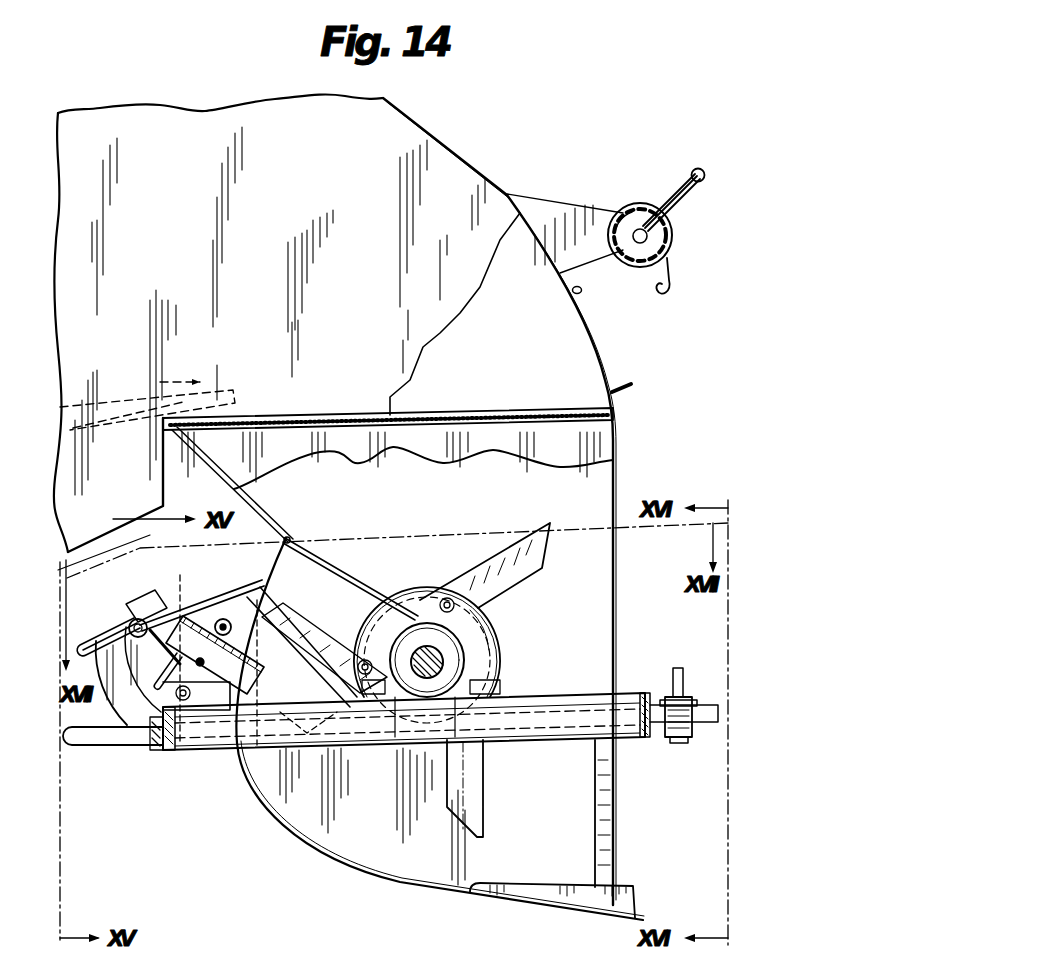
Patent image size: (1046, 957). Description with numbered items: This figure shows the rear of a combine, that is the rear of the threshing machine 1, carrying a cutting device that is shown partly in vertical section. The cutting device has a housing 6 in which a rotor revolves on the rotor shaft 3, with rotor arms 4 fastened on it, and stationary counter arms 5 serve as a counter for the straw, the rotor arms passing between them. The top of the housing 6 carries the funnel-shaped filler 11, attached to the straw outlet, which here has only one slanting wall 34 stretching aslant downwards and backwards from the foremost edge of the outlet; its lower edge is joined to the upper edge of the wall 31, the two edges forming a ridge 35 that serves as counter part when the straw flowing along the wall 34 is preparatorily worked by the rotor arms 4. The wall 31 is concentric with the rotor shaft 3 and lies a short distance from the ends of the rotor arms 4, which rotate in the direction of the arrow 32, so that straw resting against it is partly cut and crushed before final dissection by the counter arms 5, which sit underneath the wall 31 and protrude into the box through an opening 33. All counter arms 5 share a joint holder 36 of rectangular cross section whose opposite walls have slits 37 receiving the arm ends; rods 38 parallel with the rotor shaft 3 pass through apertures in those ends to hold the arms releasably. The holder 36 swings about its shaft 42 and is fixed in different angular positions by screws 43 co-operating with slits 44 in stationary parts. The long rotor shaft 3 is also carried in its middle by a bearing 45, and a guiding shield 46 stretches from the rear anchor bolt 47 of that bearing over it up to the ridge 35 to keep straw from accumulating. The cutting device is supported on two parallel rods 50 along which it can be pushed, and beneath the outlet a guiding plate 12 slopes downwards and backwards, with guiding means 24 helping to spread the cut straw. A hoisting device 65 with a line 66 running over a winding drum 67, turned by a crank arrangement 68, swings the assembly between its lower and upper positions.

The threshing machine 1 is at (477, 181).
The rotor shaft 3 is at (425, 640).
The rotor arms 4 is at (543, 568).
The counter arms 5 is at (287, 702).
The housing 6 is at (615, 571).
The funnel-shaped filler 11 is at (502, 423).
The guiding plate 12 is at (405, 880).
The guiding means 24 is at (530, 886).
The wall 31 is at (268, 572).
The arrow 32 is at (397, 467).
The opening 33 is at (247, 655).
The slanting wall 34 is at (258, 506).
The ridge 35 is at (290, 538).
The holder 36 is at (196, 600).
The slits 37 is at (181, 590).
The rods 38 is at (156, 608).
The holder shaft 42 is at (184, 742).
The screws 43 is at (131, 612).
The slits 44 is at (106, 640).
The bearing 45 is at (395, 727).
The guiding shield 46 is at (338, 571).
The rear anchor bolt 47 is at (492, 655).
The rods 50 is at (108, 746).
The hoisting device 65 is at (636, 206).
The line 66 is at (671, 264).
The winding drum 67 is at (622, 212).
The crank arrangement 68 is at (691, 172).